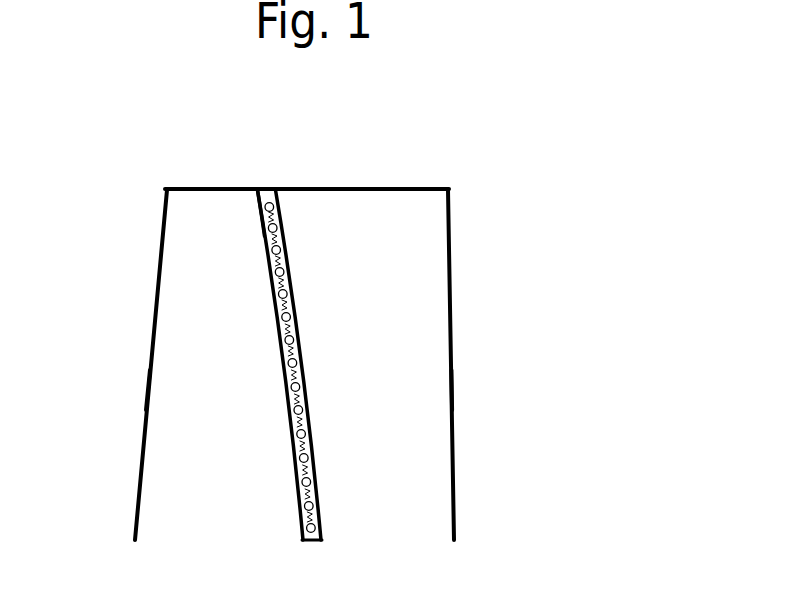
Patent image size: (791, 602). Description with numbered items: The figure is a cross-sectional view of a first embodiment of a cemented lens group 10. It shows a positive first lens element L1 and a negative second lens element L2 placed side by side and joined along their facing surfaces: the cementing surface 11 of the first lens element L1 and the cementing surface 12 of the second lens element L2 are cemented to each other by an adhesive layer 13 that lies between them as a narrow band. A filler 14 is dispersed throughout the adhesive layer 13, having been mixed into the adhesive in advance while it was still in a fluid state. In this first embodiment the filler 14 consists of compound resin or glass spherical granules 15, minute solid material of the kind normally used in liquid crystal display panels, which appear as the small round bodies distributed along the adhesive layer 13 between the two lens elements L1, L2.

The cemented lens group 10 is at (493, 117).
The cementing surface of the first lens element 11 is at (268, 258).
The cementing surface of the second lens element 12 is at (293, 255).
The adhesive layer 13 is at (282, 215).
The filler 14 is at (456, 365).
The spherical granules 15 is at (295, 298).
The first lens element L1 is at (205, 407).
The second lens element L2 is at (395, 413).